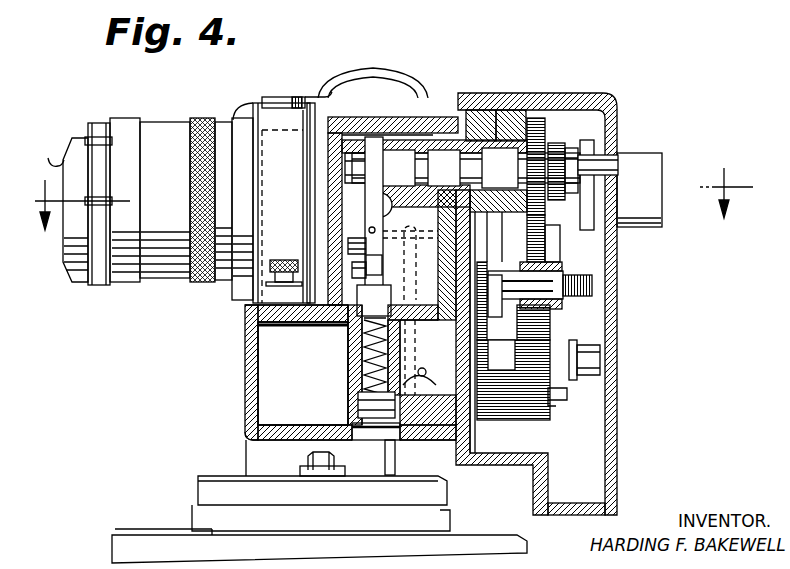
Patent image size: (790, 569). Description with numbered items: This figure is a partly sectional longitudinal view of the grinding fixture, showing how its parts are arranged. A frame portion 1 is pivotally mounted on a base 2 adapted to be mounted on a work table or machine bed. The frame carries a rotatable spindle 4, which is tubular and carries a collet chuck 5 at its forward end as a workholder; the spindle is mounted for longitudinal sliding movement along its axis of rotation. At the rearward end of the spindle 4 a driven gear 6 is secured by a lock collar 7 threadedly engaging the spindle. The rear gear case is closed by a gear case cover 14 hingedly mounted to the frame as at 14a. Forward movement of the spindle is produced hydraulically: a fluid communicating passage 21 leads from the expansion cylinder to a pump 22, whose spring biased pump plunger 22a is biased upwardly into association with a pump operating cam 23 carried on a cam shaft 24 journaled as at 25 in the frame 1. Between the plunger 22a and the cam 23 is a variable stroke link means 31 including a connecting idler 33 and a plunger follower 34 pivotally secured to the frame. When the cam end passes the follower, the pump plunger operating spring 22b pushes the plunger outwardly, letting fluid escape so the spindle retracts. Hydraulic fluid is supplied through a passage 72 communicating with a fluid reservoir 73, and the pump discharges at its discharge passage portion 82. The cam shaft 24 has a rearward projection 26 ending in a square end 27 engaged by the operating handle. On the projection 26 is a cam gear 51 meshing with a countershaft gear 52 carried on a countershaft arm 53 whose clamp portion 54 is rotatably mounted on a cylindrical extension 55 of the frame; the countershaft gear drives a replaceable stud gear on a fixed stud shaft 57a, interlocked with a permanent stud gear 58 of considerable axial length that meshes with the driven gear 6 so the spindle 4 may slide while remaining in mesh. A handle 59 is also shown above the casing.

The frame portion 1 is at (243, 382).
The base 2 is at (319, 501).
The spindle 4 is at (698, 189).
The collet chuck 5 is at (394, 198).
The driven gear 6 is at (550, 108).
The lock collar 7 is at (593, 141).
The gear case cover 14 is at (512, 470).
The hinge mounting 14a is at (585, 504).
The fluid communicating passage 21 is at (412, 310).
The pump 22 is at (346, 363).
The pump plunger 22a is at (374, 300).
The pump plunger operating spring 22b is at (357, 374).
The pump operating cam 23 is at (372, 207).
The cam shaft 24 is at (466, 168).
The journal 25 is at (450, 168).
The rearward projection 26 is at (567, 180).
The square end 27 is at (611, 157).
The variable stroke link means 31 is at (350, 247).
The connecting idler 33 is at (356, 268).
The plunger follower 34 is at (380, 272).
The cam gear 51 is at (571, 141).
The countershaft gear 52 is at (558, 398).
The countershaft arm 53 is at (497, 265).
The clamp portion 54 is at (513, 128).
The cylindrical extension 55 is at (492, 125).
The fixed stud shaft 57a is at (601, 346).
The permanent stud gear 58 is at (526, 426).
The handle 59 is at (419, 84).
The passage 72 is at (426, 373).
The fluid reservoir 73 is at (303, 373).
The discharge passage portion 82 is at (408, 457).